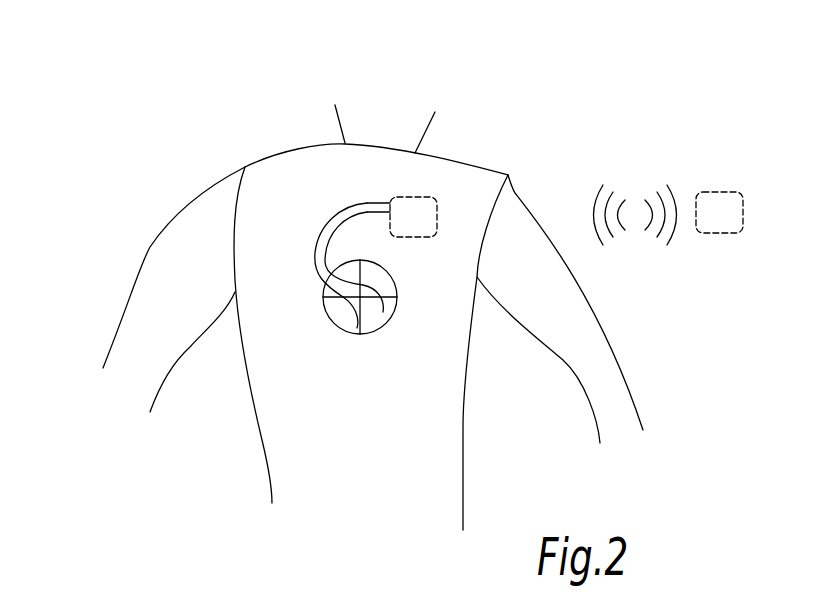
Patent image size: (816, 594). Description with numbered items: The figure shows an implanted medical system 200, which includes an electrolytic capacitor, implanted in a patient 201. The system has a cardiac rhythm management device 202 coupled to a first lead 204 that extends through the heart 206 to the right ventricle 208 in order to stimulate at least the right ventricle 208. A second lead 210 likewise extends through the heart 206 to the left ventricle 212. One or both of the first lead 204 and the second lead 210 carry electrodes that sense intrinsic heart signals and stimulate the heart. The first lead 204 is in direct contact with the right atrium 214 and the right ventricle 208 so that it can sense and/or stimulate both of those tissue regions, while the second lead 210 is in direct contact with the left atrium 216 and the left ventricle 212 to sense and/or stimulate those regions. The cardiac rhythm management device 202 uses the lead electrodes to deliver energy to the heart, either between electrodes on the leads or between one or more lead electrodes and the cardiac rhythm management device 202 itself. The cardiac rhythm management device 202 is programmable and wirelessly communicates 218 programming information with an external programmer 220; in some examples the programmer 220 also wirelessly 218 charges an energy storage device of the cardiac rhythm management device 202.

The implanted medical system 200 is at (117, 97).
The patient 201 is at (219, 187).
The cardiac rhythm management device 202 is at (430, 197).
The first lead 204 is at (316, 236).
The heart 206 is at (385, 278).
The right ventricle 208 is at (335, 322).
The second lead 210 is at (368, 203).
The left ventricle 212 is at (387, 325).
The right atrium 214 is at (323, 291).
The left atrium 216 is at (397, 290).
The wireless communication 218 is at (618, 193).
The programmer 220 is at (719, 192).